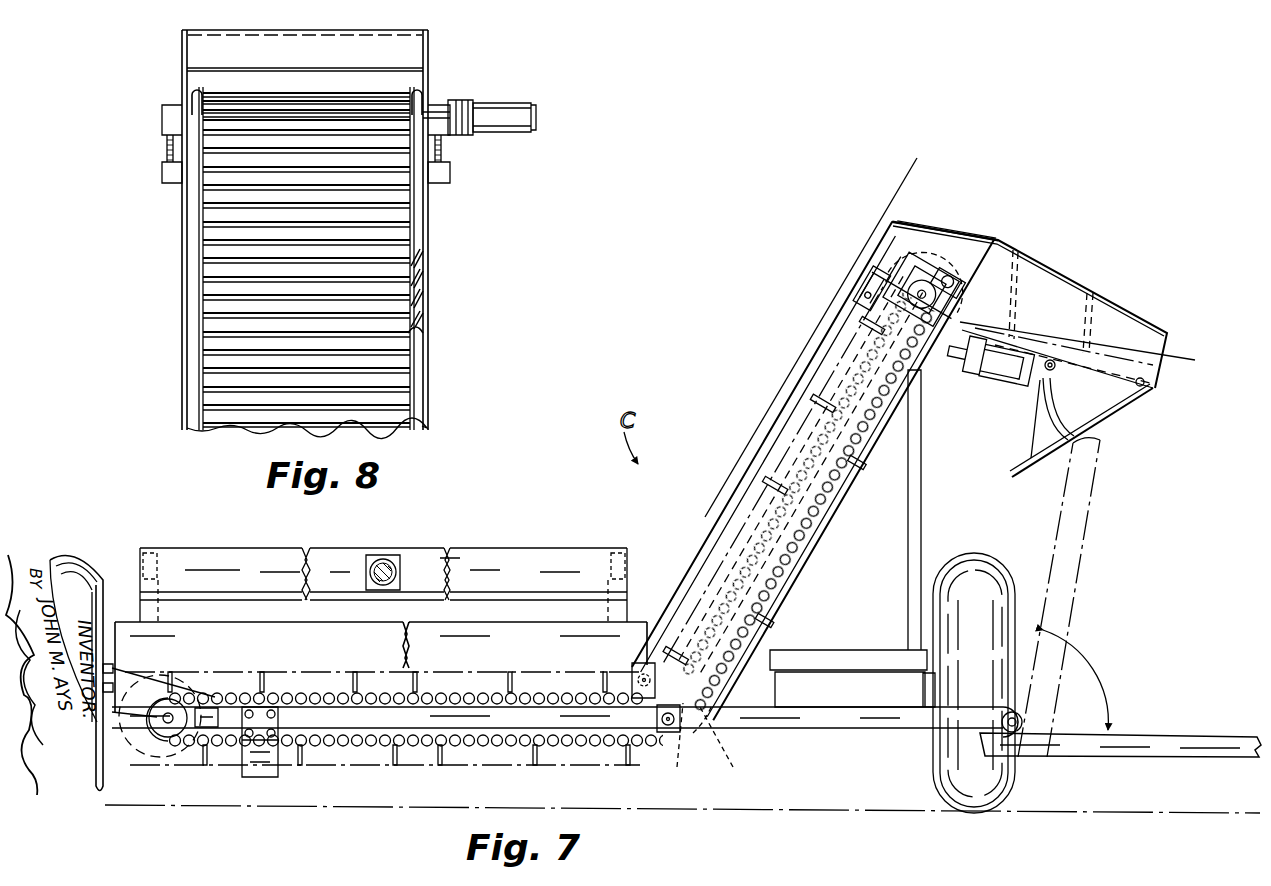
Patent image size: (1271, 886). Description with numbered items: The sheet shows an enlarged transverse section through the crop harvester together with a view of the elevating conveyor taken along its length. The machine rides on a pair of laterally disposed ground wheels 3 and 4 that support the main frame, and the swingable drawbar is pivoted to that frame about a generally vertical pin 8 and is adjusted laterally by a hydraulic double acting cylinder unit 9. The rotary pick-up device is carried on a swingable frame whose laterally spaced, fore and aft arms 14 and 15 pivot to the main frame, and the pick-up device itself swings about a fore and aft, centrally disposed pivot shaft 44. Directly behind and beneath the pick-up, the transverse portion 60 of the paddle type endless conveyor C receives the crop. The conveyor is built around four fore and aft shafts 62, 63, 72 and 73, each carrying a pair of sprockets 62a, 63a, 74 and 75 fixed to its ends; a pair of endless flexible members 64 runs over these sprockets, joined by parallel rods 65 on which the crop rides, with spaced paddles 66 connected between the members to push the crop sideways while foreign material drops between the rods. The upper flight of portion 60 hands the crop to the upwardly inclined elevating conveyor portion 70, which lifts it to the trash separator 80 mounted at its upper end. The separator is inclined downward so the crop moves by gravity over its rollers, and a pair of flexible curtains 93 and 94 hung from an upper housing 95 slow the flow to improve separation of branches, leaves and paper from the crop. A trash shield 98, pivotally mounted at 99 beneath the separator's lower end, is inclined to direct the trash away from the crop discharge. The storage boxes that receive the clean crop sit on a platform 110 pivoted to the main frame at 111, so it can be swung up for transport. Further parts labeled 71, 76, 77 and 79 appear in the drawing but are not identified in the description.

In FIG. 7, the ground wheel 3 is at (79, 560).
In FIG. 7, the ground wheel 4 is at (992, 560).
In FIG. 7, the vertical pin 8 is at (903, 168).
In FIG. 7, the hydraulic double acting cylinder unit 9 is at (973, 318).
In FIG. 7, the arm 14 is at (630, 576).
In FIG. 7, the arm 15 is at (143, 562).
In FIG. 7, the pivot shaft 44 is at (389, 559).
In FIG. 7, the transverse conveyor portion 60 is at (528, 620).
In FIG. 7, the shaft 62 is at (163, 740).
In FIG. 7, the sprocket 62a is at (193, 757).
In FIG. 7, the shaft 63 is at (688, 747).
In FIG. 7, the sprocket 63a is at (727, 747).
In FIG. 7, the endless flexible member 64 is at (246, 705).
In FIG. 7, the rod 65 is at (312, 692).
In FIG. 7, the paddle 66 is at (362, 678).
In FIG. 8, the elevating conveyor portion 70 is at (176, 292).
In FIG. 7, the elevating conveyor portion 70 is at (788, 396).
In FIG. 8, the slats 71 is at (205, 172).
In FIG. 7, the shaft 72 is at (635, 672).
In FIG. 8, the shaft 73 is at (438, 108).
In FIG. 7, the shaft 73 is at (926, 275).
In FIG. 7, the sprocket 74 is at (655, 718).
In FIG. 8, the sprocket 75 is at (197, 90).
In FIG. 7, the sprocket 75 is at (951, 278).
In FIG. 8, the conveyor chain 76 is at (421, 292).
In FIG. 7, the conveyor chain 76 is at (849, 364).
In FIG. 8, the drive motor 77 is at (514, 103).
In FIG. 7, the drive motor 77 is at (904, 268).
In FIG. 7, the support post 79 is at (926, 490).
In FIG. 7, the trash separator 80 is at (1076, 264).
In FIG. 7, the curtain 93 is at (1015, 275).
In FIG. 7, the curtain 94 is at (1100, 300).
In FIG. 7, the upper housing 95 is at (1131, 326).
In FIG. 7, the trash shield 98 is at (1120, 412).
In FIG. 7, the pivot 99 is at (1146, 383).
In FIG. 7, the platform 110 is at (1163, 740).
In FIG. 7, the pivot 111 is at (1023, 718).